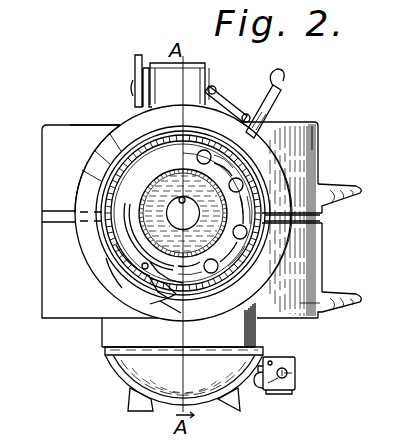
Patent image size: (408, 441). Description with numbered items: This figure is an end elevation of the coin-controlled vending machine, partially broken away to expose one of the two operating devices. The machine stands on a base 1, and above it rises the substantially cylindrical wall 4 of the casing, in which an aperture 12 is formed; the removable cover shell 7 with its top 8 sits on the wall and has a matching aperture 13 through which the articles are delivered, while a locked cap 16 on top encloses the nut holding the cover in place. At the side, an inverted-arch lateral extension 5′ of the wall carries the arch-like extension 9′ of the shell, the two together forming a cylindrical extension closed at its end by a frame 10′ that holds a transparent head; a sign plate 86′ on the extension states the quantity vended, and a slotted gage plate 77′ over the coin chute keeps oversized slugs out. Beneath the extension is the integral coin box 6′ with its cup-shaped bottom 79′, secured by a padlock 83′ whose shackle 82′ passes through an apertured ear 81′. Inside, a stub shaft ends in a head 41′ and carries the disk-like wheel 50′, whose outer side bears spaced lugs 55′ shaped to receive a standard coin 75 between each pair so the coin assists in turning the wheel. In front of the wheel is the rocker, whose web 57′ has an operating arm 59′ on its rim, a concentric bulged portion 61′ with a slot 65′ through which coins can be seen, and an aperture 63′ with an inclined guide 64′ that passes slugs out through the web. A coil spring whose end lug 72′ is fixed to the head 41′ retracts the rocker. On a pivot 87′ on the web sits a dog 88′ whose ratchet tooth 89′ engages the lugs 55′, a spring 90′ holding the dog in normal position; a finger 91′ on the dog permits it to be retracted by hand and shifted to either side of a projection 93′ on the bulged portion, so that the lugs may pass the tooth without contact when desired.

The base 1 is at (130, 400).
The cylindrical wall 4 is at (56, 283).
The lateral extension 5′ is at (76, 234).
The coin box 6′ is at (257, 324).
The cylindrical shell 7 is at (303, 153).
The top 8 is at (88, 126).
The arch-like casing extension 9′ is at (282, 174).
The frame 10′ is at (112, 268).
The aperture 12 is at (322, 258).
The aperture 13 is at (321, 148).
The cap 16 is at (207, 80).
The head 41′ is at (76, 207).
The disk-like wheel 50′ is at (262, 233).
The lug 55′ is at (200, 284).
The web 57′ is at (140, 205).
The operating arm 59′ is at (270, 106).
The bulged portion 61′ is at (100, 205).
The aperture 63′ is at (140, 200).
The inclined guide 64′ is at (128, 180).
The slot 65′ is at (181, 199).
The end lug 72′ is at (138, 165).
The standard coin 75 is at (222, 160).
The slotted gage plate 77′ is at (212, 84).
The cup-shaped bottom 79′ is at (127, 363).
The apertured ear 81′ is at (282, 380).
The shackle 82′ is at (262, 389).
The padlock 83′ is at (296, 366).
The sign plate 86′ is at (135, 62).
The pivot 87′ is at (163, 282).
The dog 88′ is at (157, 297).
The ratchet tooth 89′ is at (222, 290).
The spring 90′ is at (113, 262).
The finger 91′ is at (165, 300).
The projection 93′ is at (136, 318).